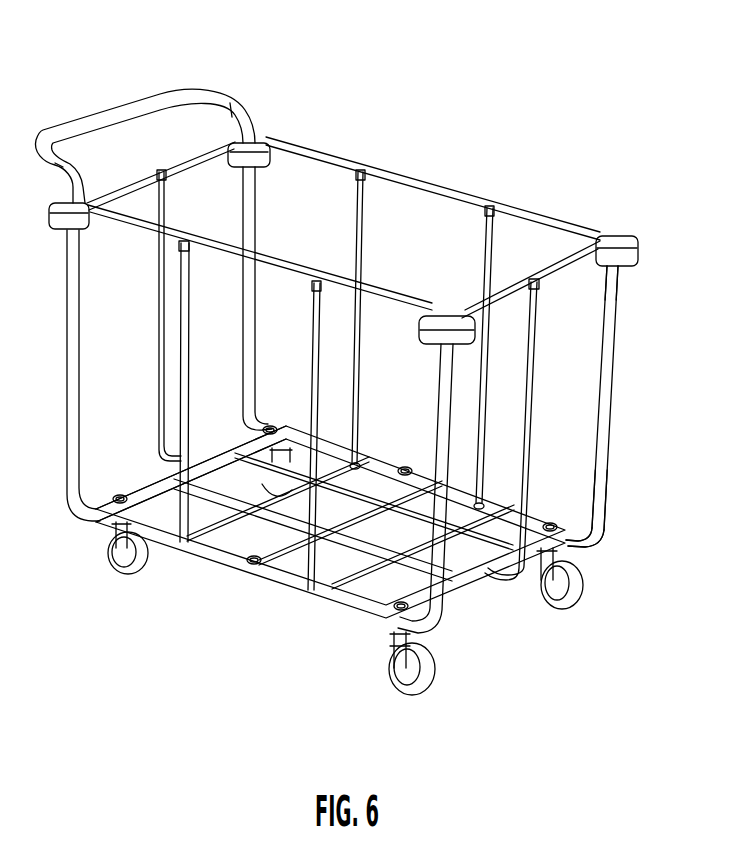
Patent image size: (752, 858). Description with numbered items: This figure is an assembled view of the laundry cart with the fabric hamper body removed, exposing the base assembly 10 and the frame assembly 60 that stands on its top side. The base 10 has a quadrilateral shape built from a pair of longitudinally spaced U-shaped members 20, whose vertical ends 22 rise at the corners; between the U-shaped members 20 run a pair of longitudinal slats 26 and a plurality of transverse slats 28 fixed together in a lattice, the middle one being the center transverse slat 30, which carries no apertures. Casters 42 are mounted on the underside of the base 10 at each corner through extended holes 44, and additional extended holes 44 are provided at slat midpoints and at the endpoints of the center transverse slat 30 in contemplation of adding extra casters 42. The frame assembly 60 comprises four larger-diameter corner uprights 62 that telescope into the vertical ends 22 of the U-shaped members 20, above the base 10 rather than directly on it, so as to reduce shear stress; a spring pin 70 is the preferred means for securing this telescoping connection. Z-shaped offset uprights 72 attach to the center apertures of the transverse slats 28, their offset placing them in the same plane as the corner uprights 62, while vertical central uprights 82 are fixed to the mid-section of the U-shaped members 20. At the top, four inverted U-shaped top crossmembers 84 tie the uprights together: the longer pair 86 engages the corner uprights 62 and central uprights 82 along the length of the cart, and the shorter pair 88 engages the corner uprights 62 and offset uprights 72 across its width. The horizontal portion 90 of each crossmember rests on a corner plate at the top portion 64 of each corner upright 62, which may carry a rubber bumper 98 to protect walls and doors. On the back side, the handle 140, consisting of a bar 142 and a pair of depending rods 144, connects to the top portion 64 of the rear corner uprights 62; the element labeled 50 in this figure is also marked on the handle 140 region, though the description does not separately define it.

The base assembly 10 is at (363, 652).
The U-shaped members 20 is at (338, 608).
The vertical ends 22 is at (606, 524).
The longitudinal slats 26 is at (368, 500).
The transverse slats 28 is at (133, 493).
The center transverse slat 30 is at (410, 468).
The casters 42 is at (125, 565).
The extended holes 44 is at (108, 508).
The handle 50 is at (149, 102).
The frame assembly 60 is at (530, 169).
The corner uprights 62 is at (614, 388).
The top portion 64 is at (622, 290).
The spring pin 70 is at (612, 498).
The offset uprights 72 is at (527, 440).
The central uprights 82 is at (363, 262).
The top crossmembers 84 is at (214, 150).
The longer pair of top crossmembers 86 is at (412, 180).
The shorter pair of top crossmembers 88 is at (183, 158).
The horizontal portion 90 is at (600, 238).
The rubber bumper 98 is at (624, 240).
The handle 140 is at (99, 118).
The bar 142 is at (131, 102).
The depending rods 144 is at (247, 122).